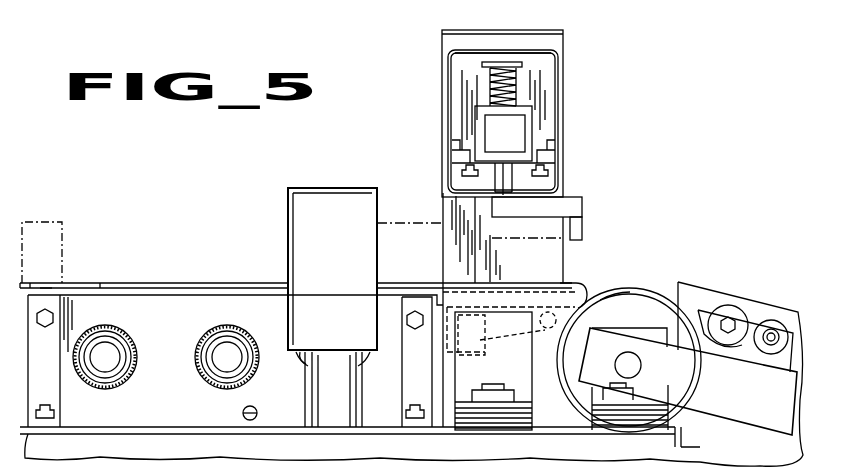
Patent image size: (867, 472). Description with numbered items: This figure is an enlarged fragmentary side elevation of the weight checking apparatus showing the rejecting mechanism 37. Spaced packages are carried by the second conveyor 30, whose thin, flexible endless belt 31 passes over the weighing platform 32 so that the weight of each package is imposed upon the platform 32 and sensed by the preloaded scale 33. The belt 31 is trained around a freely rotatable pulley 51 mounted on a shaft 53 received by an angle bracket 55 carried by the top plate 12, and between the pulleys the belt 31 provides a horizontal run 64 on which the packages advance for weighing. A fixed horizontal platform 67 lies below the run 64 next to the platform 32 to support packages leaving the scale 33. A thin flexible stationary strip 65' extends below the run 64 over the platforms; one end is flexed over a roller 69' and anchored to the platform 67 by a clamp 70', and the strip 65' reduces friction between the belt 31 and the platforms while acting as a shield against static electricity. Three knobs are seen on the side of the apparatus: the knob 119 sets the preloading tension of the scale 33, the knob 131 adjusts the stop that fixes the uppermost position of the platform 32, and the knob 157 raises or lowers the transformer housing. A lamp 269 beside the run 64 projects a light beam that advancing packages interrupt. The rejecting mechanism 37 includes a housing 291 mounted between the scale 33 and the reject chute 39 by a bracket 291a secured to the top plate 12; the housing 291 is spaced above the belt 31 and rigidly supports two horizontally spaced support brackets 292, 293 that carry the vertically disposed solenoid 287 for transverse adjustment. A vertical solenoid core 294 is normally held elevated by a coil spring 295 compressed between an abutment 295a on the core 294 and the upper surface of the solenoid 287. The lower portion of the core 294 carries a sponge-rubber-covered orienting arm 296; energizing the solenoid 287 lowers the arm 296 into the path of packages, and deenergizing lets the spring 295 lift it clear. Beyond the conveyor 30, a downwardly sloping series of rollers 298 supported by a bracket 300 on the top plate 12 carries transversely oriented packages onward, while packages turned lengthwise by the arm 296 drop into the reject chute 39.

The top plate 12 is at (358, 453).
The second conveyor 30 is at (614, 286).
The endless belt 31 is at (85, 284).
The weighing platform 32 is at (148, 293).
The scale 33 is at (205, 312).
The rejecting mechanism 37 is at (575, 80).
The reject chute 39 is at (758, 458).
The pulley 51 is at (630, 297).
The shaft 53 is at (641, 366).
The angle bracket 55 is at (648, 341).
The horizontal run 64 is at (400, 285).
The stationary strip 65' is at (77, 248).
The fixed horizontal platform 67 is at (566, 288).
The roller 69' is at (553, 320).
The clamp 70' is at (494, 371).
The knob 119 is at (108, 358).
The knob 131 is at (212, 358).
The knob 157 is at (297, 362).
The lamp 269 is at (355, 215).
The solenoid 287 is at (505, 130).
The housing 291 is at (560, 107).
The bracket 291a is at (556, 43).
The support bracket 292 is at (450, 160).
The support bracket 293 is at (558, 143).
The solenoid core 294 is at (512, 44).
The coil spring 295 is at (490, 88).
The abutment 295a is at (483, 66).
The orienting arm 296 is at (582, 233).
The series of rollers 298 is at (773, 322).
The bracket 300 is at (763, 408).